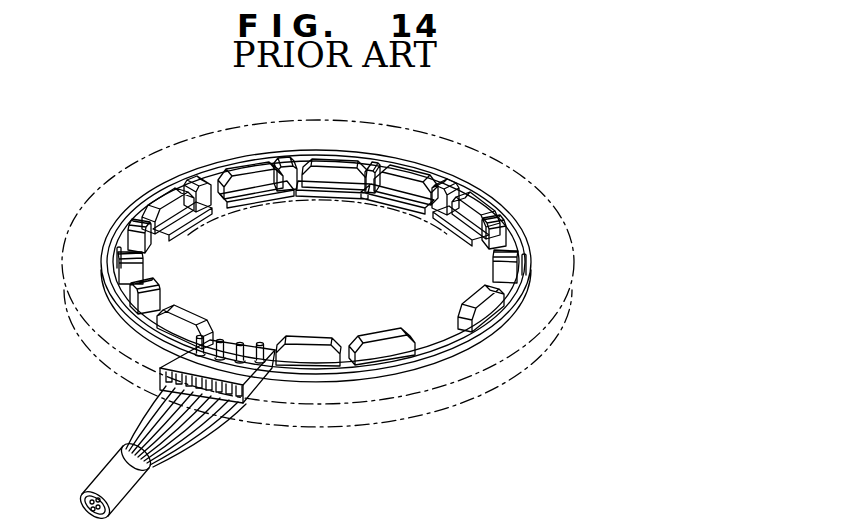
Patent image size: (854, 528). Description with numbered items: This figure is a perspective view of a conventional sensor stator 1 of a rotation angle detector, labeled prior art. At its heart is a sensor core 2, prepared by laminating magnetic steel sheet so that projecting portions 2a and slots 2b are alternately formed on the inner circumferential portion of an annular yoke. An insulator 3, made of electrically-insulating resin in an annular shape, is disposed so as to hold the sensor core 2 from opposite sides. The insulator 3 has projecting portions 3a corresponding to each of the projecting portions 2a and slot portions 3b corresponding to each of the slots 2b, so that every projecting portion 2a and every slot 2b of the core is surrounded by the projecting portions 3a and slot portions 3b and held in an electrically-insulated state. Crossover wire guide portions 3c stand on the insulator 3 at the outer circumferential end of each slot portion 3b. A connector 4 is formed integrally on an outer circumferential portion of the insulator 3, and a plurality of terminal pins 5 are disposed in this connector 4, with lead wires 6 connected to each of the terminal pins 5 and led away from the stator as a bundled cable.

The stator assembly 1 is at (42, 141).
The sensor core 2 is at (486, 176).
The projecting portions 2a is at (252, 205).
The slots 2b is at (291, 200).
The insulator 3 is at (505, 297).
The projecting portions 3a is at (185, 202).
The slot portions 3b is at (373, 168).
The crossover wire guide portions 3c is at (137, 206).
The connector 4 is at (167, 366).
The terminal pins 5 is at (258, 346).
The lead wires 6 is at (185, 447).